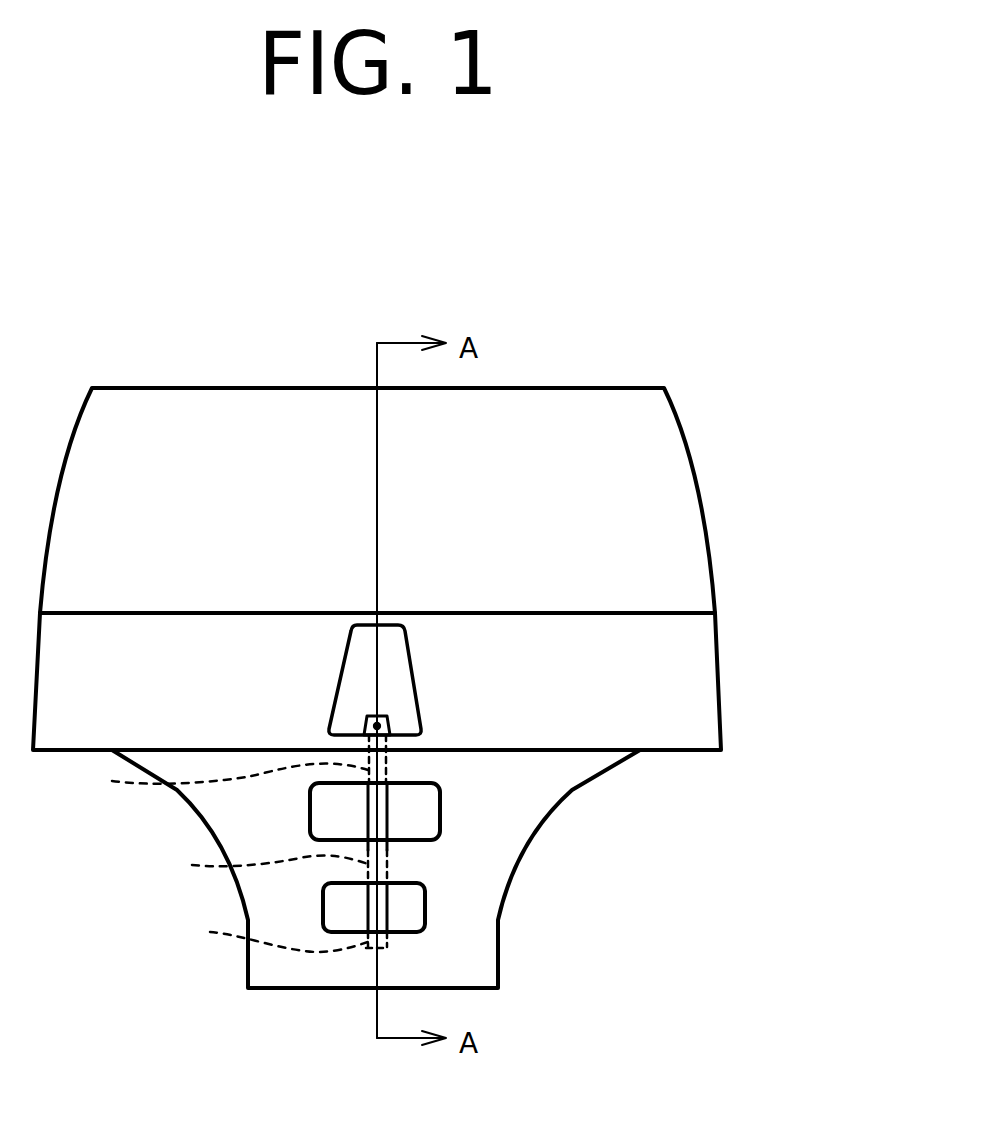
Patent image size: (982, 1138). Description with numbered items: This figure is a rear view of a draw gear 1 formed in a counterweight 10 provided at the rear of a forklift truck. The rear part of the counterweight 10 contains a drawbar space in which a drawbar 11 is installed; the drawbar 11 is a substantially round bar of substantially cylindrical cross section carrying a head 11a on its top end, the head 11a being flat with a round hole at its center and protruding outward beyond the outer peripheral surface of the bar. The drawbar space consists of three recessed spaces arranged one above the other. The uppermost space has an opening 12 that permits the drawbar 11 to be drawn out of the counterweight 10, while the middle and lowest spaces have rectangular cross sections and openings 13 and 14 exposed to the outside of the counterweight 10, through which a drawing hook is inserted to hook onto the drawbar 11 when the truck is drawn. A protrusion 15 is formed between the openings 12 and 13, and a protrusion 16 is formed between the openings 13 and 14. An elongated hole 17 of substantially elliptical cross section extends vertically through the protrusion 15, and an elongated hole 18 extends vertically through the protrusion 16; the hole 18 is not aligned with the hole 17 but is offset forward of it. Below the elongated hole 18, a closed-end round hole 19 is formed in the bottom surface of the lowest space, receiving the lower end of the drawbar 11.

The draw gear 1 is at (280, 668).
The counterweight 10 is at (660, 419).
The drawbar 11 is at (387, 825).
The head 11a is at (390, 726).
The opening 12 is at (408, 655).
The opening 13 is at (440, 815).
The opening 14 is at (426, 908).
The protrusion 15 is at (408, 765).
The protrusion 16 is at (415, 862).
The elongated hole 17 is at (222, 783).
The elongated hole 18 is at (262, 866).
The closed-end round hole 19 is at (272, 933).